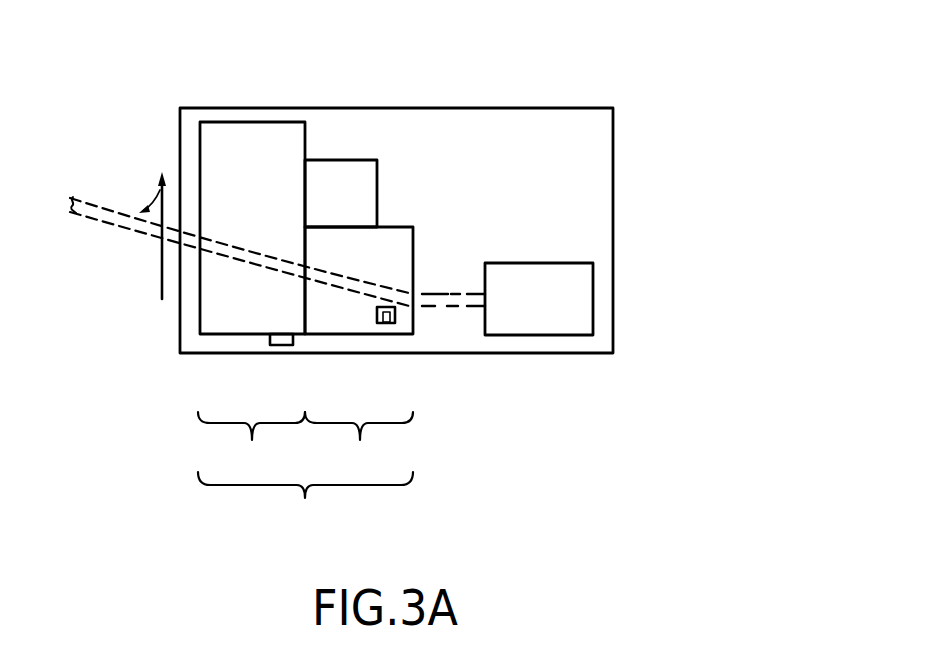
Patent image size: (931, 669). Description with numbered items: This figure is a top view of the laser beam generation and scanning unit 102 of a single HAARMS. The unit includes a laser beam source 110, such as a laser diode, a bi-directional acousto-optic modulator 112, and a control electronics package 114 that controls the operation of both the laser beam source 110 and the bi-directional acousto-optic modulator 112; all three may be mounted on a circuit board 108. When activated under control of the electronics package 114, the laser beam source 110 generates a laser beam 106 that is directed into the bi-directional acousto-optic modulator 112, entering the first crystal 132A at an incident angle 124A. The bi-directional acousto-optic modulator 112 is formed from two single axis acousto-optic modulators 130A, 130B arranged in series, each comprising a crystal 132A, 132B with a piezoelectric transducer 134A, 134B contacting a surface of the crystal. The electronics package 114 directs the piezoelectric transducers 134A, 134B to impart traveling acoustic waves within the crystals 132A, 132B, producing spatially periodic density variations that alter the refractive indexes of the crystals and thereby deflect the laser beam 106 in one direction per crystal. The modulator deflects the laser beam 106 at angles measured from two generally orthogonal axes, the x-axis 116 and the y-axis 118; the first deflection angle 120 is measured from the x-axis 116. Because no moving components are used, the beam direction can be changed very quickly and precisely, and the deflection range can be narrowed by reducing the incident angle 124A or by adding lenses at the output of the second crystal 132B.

The laser beam generation and scanning unit 102 is at (507, 63).
The laser beam 106 is at (80, 209).
The circuit board 108 is at (586, 157).
The laser beam source 110 is at (536, 277).
The bi-directional acousto-optic modulator 112 is at (305, 502).
The control electronics package 114 is at (357, 185).
The x-axis 116 is at (158, 180).
The y-axis 118 is at (162, 299).
The first deflection angle 120 is at (152, 204).
The incident angle 124A is at (439, 314).
The single axis acousto-optic modulator 130A is at (359, 442).
The single axis acousto-optic modulator 130B is at (251, 443).
The first crystal 132A is at (390, 240).
The second crystal 132B is at (247, 137).
The piezoelectric transducer 134A is at (386, 325).
The piezoelectric transducer 134B is at (279, 347).